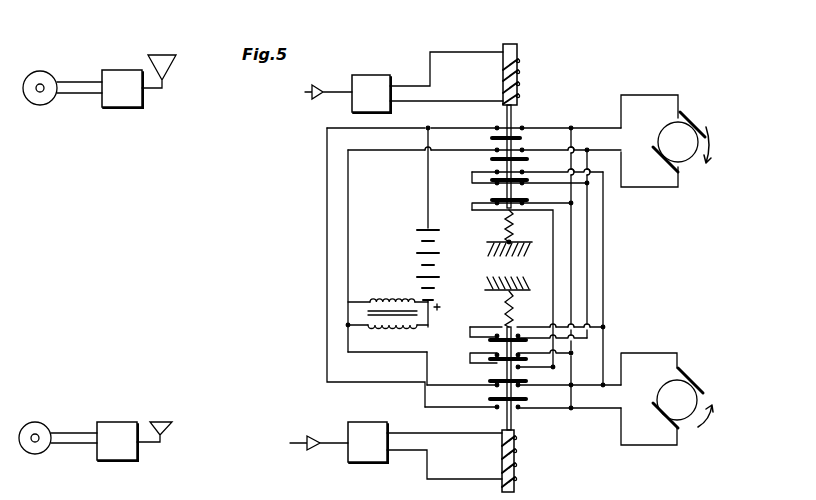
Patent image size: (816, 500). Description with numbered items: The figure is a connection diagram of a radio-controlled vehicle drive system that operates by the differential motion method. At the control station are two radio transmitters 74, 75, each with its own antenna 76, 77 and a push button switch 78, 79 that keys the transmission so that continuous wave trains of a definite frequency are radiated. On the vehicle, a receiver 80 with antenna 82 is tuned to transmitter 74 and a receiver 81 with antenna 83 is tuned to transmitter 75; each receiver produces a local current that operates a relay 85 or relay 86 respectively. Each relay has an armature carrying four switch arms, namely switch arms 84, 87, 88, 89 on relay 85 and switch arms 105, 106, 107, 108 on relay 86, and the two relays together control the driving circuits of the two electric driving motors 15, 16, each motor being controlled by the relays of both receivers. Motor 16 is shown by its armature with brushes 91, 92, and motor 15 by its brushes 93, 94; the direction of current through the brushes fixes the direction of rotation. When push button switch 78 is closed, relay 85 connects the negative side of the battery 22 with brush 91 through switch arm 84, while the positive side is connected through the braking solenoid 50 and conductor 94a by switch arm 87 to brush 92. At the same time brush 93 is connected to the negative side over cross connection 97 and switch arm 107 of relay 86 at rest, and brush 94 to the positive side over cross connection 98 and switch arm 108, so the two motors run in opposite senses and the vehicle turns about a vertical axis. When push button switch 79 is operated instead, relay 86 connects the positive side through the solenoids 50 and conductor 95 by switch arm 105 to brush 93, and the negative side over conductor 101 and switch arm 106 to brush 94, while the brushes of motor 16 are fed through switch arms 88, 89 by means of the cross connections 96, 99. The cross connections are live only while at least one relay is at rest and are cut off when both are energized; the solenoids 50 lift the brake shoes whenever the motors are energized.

The electric driving motor 15 is at (688, 391).
The electric driving motor 16 is at (683, 130).
The battery 22 is at (438, 264).
The braking solenoid 50 is at (402, 299).
The radio transmitter 74 is at (140, 103).
The radio transmitter 75 is at (133, 458).
The antenna 76 is at (160, 54).
The antenna 77 is at (168, 427).
The push button switch 78 is at (44, 92).
The push button switch 79 is at (37, 432).
The receiver 80 is at (375, 75).
The receiver 81 is at (372, 452).
The antenna 82 is at (317, 93).
The antenna 83 is at (308, 449).
The switch arm 84 is at (521, 136).
The relay 85 is at (520, 72).
The relay 86 is at (516, 460).
The switch arm 87 is at (527, 156).
The switch arm 88 is at (523, 178).
The switch arm 89 is at (520, 197).
The brush 91 is at (712, 134).
The brush 92 is at (663, 157).
The brush 93 is at (664, 413).
The brush 94 is at (700, 390).
The conductor 94a is at (352, 247).
The conductor 95 is at (378, 353).
The cross connection 96 is at (553, 264).
The cross connection 97 is at (572, 243).
The cross connection 98 is at (587, 306).
The cross connection 99 is at (603, 290).
The conductor 101 is at (325, 252).
The switch arm 105 is at (490, 398).
The switch arm 106 is at (492, 380).
The switch arm 107 is at (496, 356).
The switch arm 108 is at (500, 335).